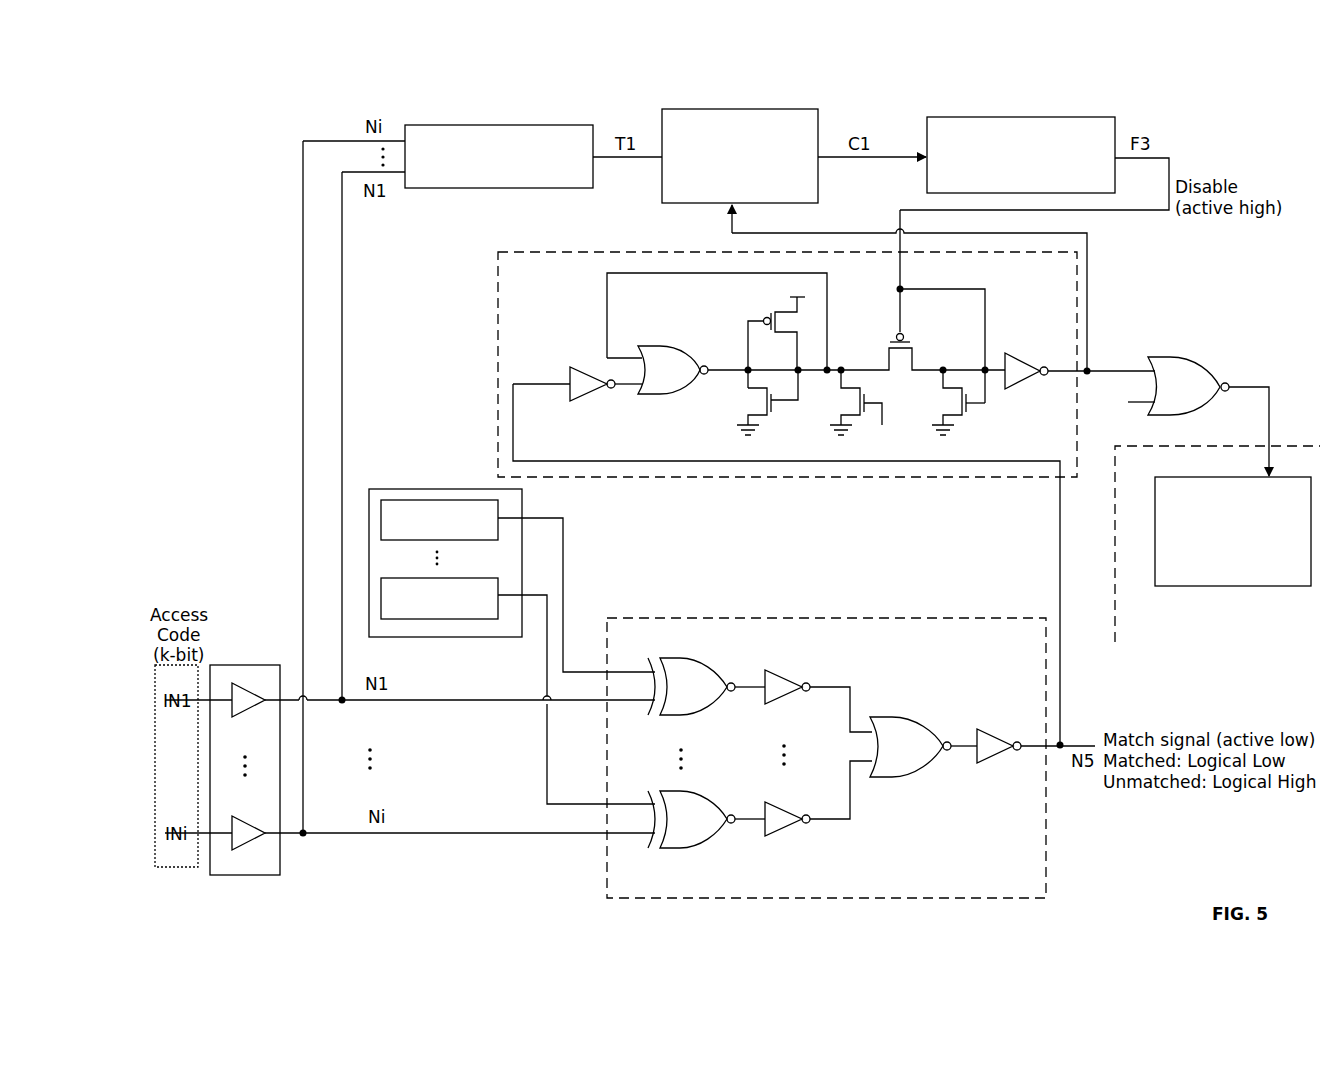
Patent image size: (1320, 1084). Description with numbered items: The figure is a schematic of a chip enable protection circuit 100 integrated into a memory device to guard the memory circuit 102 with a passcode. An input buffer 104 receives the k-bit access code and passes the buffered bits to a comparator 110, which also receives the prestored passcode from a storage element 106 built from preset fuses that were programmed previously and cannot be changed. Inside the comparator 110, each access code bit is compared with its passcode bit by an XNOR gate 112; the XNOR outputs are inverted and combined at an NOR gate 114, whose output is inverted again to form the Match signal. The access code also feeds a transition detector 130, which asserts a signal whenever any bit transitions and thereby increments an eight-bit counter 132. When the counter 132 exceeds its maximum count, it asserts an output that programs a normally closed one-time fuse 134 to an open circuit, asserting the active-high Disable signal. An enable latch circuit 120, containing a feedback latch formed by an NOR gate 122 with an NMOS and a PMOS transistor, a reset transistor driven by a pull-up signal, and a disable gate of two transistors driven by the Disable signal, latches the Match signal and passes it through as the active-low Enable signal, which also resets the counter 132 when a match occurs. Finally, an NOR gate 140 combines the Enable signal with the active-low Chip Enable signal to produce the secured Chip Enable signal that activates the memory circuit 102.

The chip enable protection circuit 100 is at (1278, 105).
The memory circuit 102 is at (1218, 586).
The input buffer 104 is at (245, 665).
The storage element 106 is at (405, 489).
The comparator 110 is at (955, 618).
The XNOR gate 112 is at (662, 658).
The NOR gate 114 is at (880, 718).
The enable latch circuit 120 is at (498, 270).
The NOR gate 122 is at (647, 392).
The transition detector 130 is at (562, 125).
The counter 132 is at (795, 109).
The one-time fuse 134 is at (1075, 117).
The NOR gate 140 is at (1198, 396).